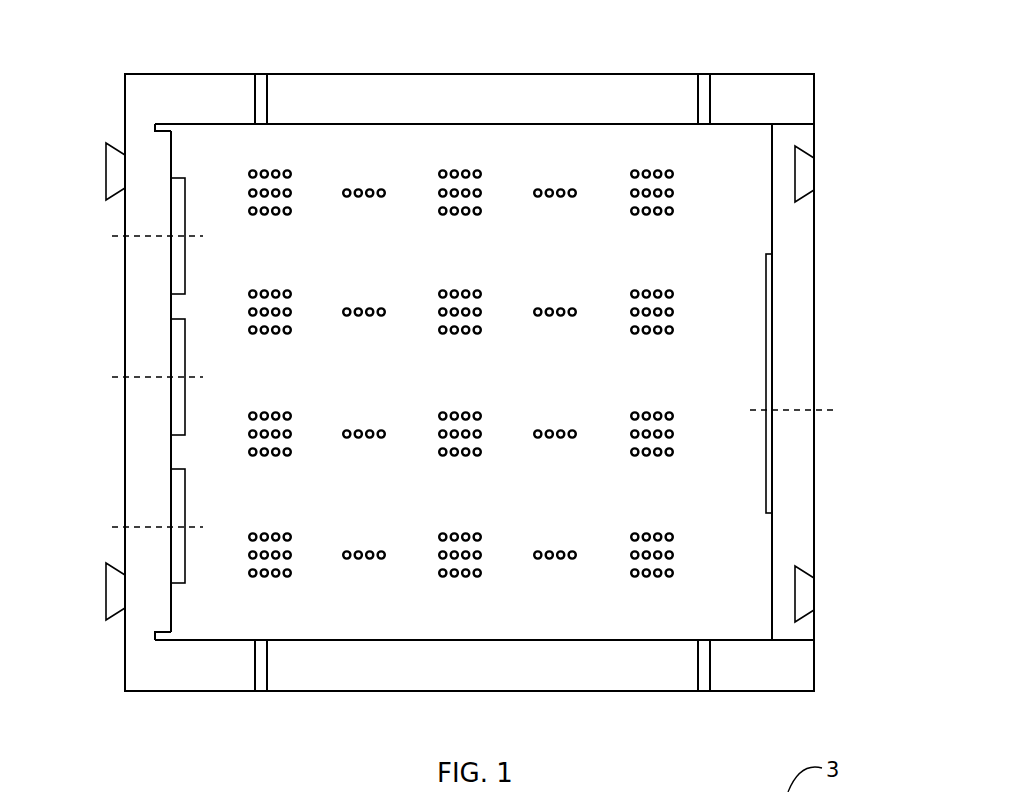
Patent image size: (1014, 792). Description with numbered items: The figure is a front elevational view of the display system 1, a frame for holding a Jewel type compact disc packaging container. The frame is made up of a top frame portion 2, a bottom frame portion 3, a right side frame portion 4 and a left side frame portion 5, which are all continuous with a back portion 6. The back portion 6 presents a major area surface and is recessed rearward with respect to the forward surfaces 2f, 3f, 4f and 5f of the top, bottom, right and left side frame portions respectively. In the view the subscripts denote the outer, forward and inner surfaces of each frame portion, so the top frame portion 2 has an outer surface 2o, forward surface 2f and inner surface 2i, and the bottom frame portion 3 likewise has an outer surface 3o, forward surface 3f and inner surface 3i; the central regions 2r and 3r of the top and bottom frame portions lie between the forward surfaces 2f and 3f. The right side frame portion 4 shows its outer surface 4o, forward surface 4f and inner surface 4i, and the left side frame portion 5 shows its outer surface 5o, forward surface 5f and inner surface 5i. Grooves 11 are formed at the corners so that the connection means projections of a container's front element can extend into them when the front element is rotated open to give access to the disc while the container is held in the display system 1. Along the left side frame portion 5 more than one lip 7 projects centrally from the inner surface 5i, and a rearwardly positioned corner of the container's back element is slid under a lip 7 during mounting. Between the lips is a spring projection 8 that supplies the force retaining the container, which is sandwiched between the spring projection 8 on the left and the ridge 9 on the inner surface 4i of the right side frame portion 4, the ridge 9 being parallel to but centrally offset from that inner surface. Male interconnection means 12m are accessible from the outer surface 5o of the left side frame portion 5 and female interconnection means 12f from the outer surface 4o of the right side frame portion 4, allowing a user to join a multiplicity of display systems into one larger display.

The display system 1 is at (766, 66).
The top frame portion 2 is at (588, 108).
The outer surface of top frame portion 2o is at (440, 72).
The inner surface of top frame portion 2i is at (592, 130).
The forward surface of top frame portion 2f is at (469, 99).
The top wall central section 2r is at (482, 99).
The bottom frame portion 3 is at (368, 674).
The outer surface of bottom frame portion 3o is at (487, 698).
The inner surface of bottom frame portion 3i is at (470, 637).
The forward surface of bottom frame portion 3f is at (469, 665).
The bottom wall central section 3r is at (482, 665).
The right side frame portion 4 is at (790, 134).
The outer surface of right side frame portion 4o is at (820, 430).
The inner surface of right side frame portion 4i is at (766, 190).
The forward surface of right side frame portion 4f is at (794, 382).
The left side frame portion 5 is at (142, 442).
The outer surface of left side frame portion 5o is at (122, 222).
The inner surface of left side frame portion 5i is at (180, 301).
The forward surface of left side frame portion 5f is at (156, 382).
The back portion 6 is at (461, 373).
The lip 7 is at (180, 272).
The spring projection 8 is at (180, 362).
The ridge 9 is at (780, 327).
The grooves 11 is at (160, 124).
The male interconnection means 12m is at (108, 172).
The female interconnection means 12f is at (816, 166).